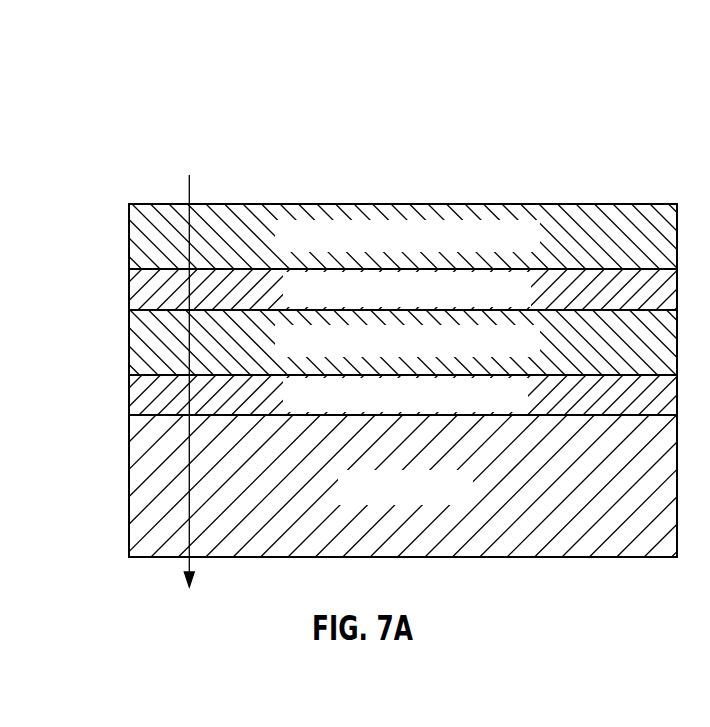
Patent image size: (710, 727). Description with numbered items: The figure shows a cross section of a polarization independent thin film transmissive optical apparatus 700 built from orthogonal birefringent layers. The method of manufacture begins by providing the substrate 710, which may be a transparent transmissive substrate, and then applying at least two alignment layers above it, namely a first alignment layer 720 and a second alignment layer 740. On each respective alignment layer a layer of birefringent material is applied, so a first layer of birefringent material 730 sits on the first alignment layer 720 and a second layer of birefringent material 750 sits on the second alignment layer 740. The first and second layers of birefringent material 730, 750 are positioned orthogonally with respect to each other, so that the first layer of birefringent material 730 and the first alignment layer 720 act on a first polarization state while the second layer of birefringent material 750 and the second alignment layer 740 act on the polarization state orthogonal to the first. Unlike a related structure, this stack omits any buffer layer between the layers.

The thin film transmissive optical apparatus 700 is at (123, 80).
The substrate 710 is at (150, 488).
The first alignment layer 720 is at (148, 405).
The first layer of birefringent material 730 is at (148, 360).
The second alignment layer 740 is at (148, 298).
The second layer of birefringent material 750 is at (148, 247).